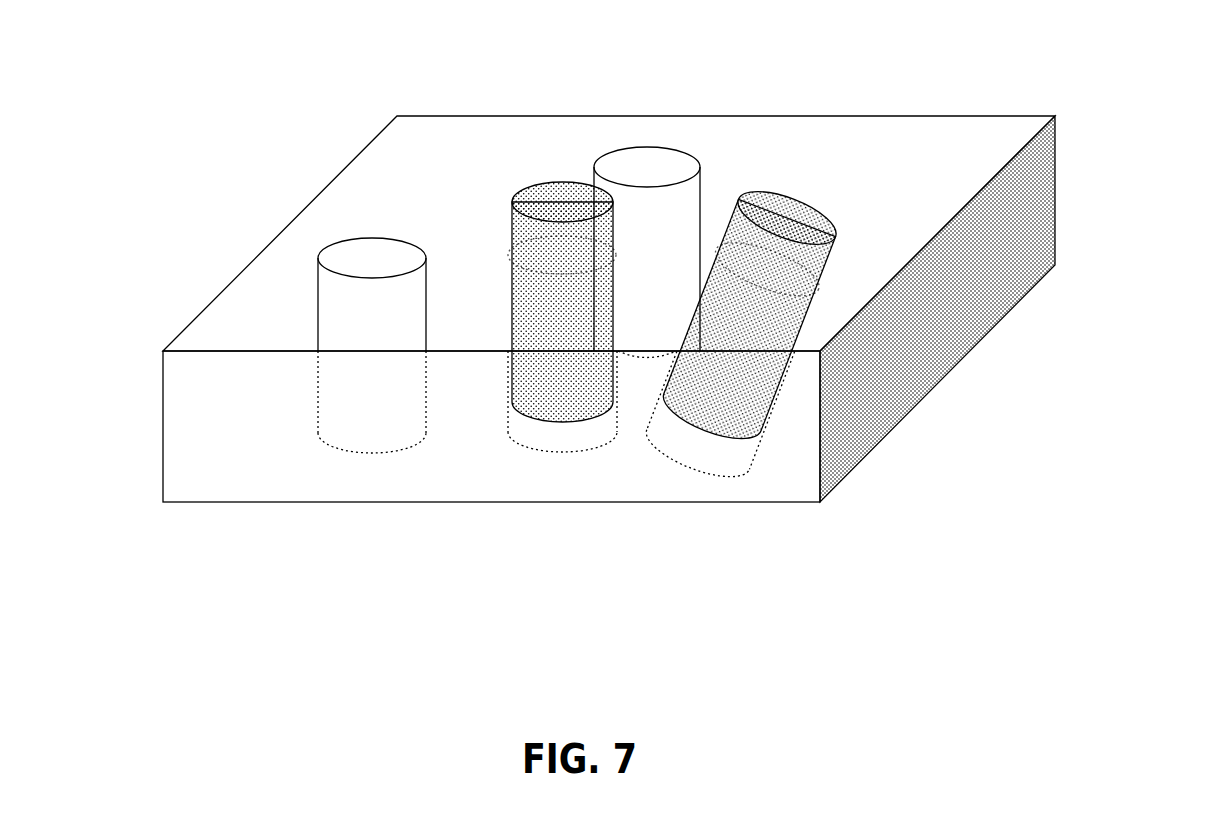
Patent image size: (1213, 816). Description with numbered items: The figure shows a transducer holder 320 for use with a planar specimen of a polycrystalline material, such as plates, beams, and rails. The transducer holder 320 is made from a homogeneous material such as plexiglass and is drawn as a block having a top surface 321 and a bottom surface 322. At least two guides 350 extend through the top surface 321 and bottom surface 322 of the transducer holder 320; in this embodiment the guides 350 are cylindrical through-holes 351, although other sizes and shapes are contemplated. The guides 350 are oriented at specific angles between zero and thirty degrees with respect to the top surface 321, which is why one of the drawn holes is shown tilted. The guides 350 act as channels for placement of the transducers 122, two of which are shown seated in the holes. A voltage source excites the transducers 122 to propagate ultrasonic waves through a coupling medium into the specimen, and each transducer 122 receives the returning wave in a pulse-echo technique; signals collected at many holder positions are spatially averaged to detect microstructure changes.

The transducer 122 is at (548, 357).
The transducer holder 320 is at (895, 225).
The top surface 321 is at (910, 140).
The bottom surface 322 is at (925, 415).
The guide 350 is at (590, 152).
The cylindrical through-hole 351 is at (347, 255).